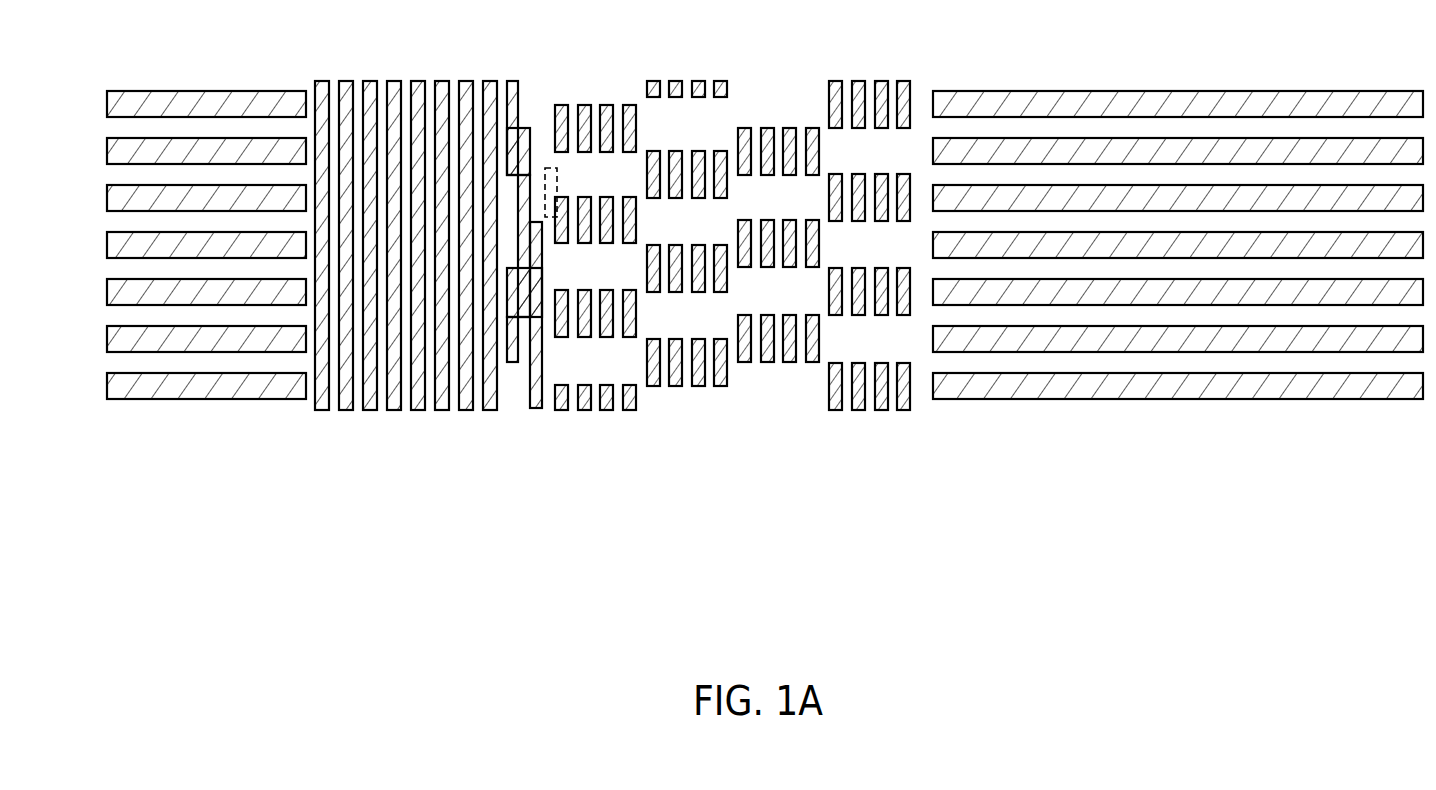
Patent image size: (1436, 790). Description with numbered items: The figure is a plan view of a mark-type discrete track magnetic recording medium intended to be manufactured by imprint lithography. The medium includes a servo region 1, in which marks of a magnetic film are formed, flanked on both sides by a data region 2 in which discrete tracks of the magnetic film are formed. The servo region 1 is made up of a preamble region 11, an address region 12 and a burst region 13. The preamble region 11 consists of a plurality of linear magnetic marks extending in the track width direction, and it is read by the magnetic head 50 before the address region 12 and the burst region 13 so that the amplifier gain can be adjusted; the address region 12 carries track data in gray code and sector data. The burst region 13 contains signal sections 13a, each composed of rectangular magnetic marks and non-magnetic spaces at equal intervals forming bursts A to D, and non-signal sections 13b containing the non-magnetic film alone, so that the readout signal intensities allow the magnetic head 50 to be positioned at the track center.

The servo region 1 is at (614, 332).
The data region 2 is at (107, 447).
The preamble region 11 is at (307, 447).
The address region 12 is at (497, 447).
The burst region 13 is at (731, 259).
The signal section 13a is at (607, 101).
The non-signal section 13b is at (701, 137).
The magnetic head 50 is at (551, 167).